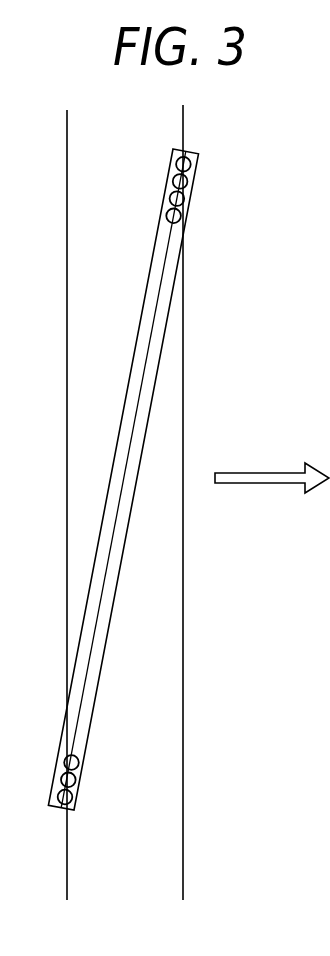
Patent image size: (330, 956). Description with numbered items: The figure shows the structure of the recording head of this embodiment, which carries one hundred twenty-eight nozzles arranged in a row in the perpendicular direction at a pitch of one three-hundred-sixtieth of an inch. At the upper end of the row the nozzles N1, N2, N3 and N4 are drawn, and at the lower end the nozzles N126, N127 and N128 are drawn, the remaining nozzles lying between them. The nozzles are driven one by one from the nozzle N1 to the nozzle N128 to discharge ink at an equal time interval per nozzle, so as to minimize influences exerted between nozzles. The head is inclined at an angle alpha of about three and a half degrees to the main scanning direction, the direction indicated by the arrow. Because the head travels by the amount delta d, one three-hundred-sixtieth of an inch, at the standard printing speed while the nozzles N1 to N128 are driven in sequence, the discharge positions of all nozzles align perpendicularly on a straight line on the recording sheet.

The nozzle N1 is at (203, 165).
The nozzle N2 is at (202, 187).
The nozzle N3 is at (201, 209).
The nozzle N4 is at (198, 232).
The nozzle N126 is at (101, 758).
The nozzle N127 is at (100, 783).
The nozzle N128 is at (99, 805).